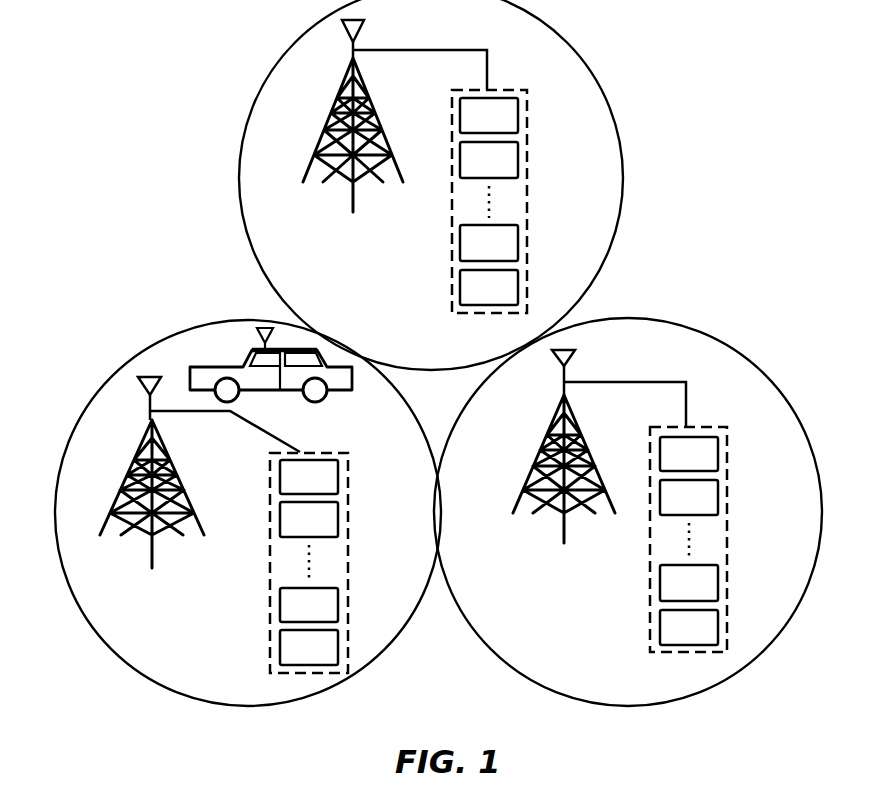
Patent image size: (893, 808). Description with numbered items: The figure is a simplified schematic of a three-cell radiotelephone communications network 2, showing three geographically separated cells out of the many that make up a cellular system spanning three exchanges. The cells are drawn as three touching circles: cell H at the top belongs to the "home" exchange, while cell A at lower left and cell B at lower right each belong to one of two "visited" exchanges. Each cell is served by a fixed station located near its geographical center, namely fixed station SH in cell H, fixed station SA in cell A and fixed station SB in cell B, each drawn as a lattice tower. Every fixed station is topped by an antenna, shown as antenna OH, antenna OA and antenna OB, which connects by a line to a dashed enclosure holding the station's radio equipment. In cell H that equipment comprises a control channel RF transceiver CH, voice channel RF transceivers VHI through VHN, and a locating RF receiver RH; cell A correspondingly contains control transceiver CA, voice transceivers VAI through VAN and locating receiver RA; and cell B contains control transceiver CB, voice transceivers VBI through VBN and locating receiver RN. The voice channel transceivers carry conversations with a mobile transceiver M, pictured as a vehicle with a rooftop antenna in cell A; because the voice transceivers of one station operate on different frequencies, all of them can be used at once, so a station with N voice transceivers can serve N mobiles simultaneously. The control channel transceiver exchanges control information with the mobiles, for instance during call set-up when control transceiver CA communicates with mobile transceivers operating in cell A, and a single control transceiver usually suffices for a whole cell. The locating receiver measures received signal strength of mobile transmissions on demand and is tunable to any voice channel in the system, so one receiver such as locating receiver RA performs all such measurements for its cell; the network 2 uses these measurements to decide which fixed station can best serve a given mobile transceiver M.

The network 2 is at (650, 103).
The cell H is at (262, 82).
The cell A is at (75, 428).
The cell B is at (790, 412).
The antenna OH is at (362, 26).
The antenna OA is at (150, 377).
The antenna OB is at (573, 357).
The fixed station SH is at (332, 180).
The fixed station SA is at (133, 540).
The fixed station SB is at (540, 508).
The mobile transceiver M is at (322, 394).
The control channel RF transceiver CH is at (489, 115).
The voice channel RF transceiver VHI is at (489, 160).
The voice channel RF transceiver VHN is at (489, 243).
The locating RF receiver RH is at (489, 287).
The control channel RF transceiver CA is at (309, 477).
The voice channel RF transceiver VAI is at (309, 519).
The voice channel RF transceiver VAN is at (309, 605).
The locating RF receiver RA is at (309, 647).
The control channel RF transceiver CB is at (689, 454).
The voice channel RF transceiver VBI is at (689, 497).
The voice channel RF transceiver VBN is at (689, 583).
The locating RF receiver RN is at (689, 627).